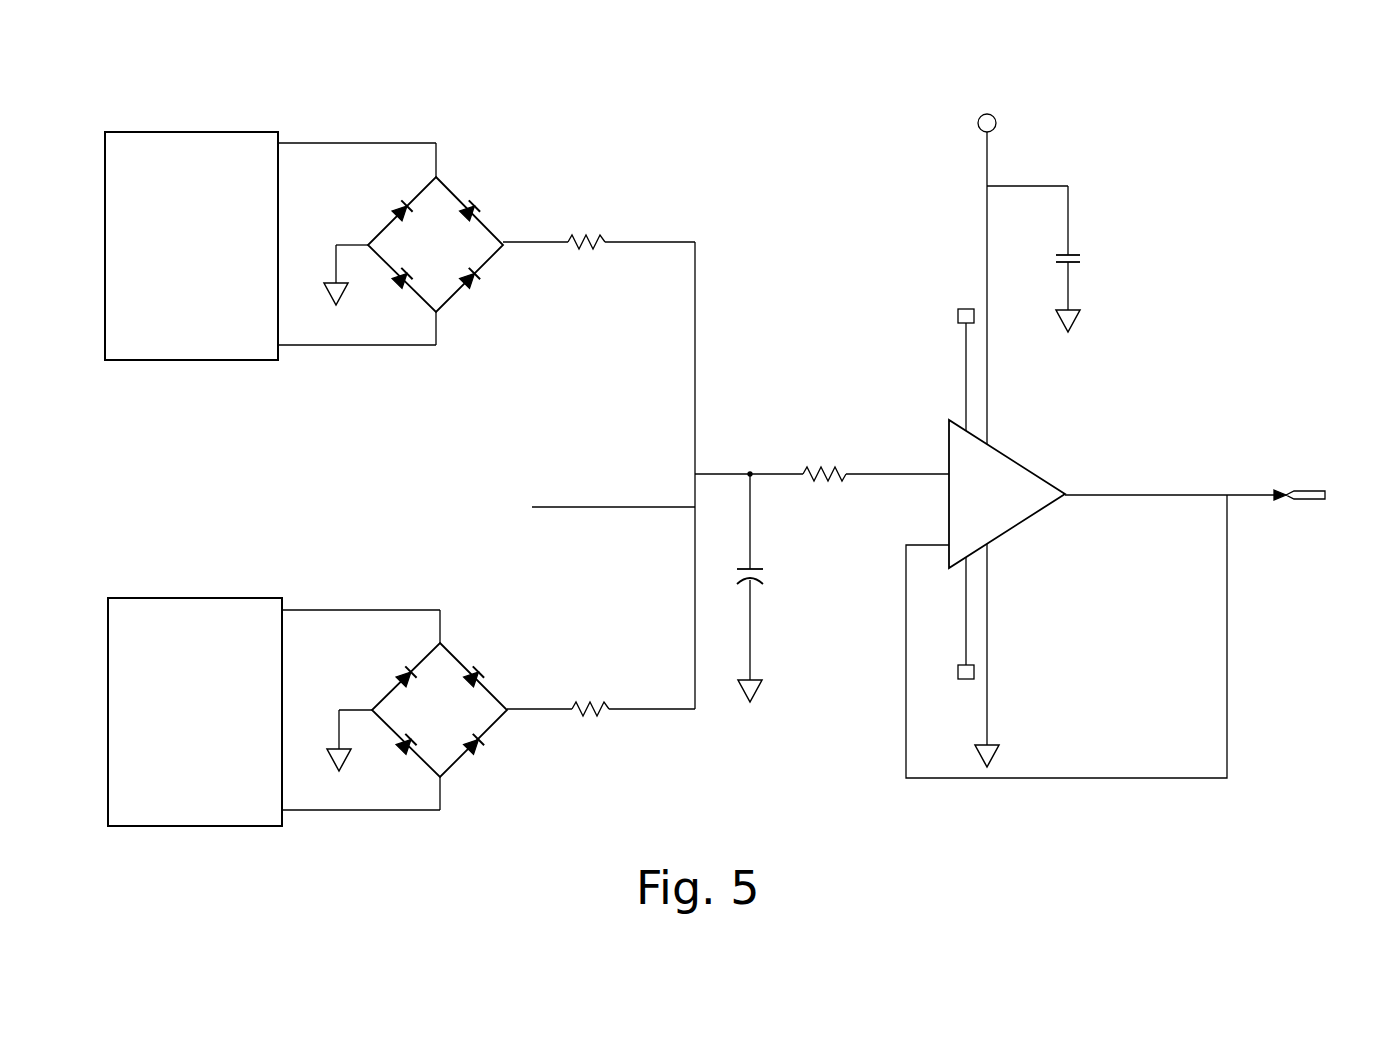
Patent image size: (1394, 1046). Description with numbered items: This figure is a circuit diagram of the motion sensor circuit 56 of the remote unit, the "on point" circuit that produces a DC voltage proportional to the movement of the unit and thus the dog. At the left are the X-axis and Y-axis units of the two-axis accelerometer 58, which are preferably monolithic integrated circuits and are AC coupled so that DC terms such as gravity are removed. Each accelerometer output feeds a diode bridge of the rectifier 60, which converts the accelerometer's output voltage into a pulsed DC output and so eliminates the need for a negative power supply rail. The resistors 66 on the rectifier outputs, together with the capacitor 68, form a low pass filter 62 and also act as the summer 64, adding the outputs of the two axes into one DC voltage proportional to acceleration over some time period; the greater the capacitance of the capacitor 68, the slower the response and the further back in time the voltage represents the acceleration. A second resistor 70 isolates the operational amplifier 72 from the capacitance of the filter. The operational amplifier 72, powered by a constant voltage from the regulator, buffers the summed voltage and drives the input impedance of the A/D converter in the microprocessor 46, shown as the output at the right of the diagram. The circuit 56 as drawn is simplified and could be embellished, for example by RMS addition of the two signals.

The microprocessor 46 is at (1313, 489).
The motion sensor circuit 56 is at (1186, 318).
The accelerometer 58 is at (193, 375).
The rectifier 60 is at (468, 435).
The filter 62 is at (657, 145).
The summer 64 is at (640, 722).
The resistors 66 is at (598, 241).
The capacitor 68 is at (789, 587).
The second resistor 70 is at (834, 470).
The operational amplifier 72 is at (1036, 518).